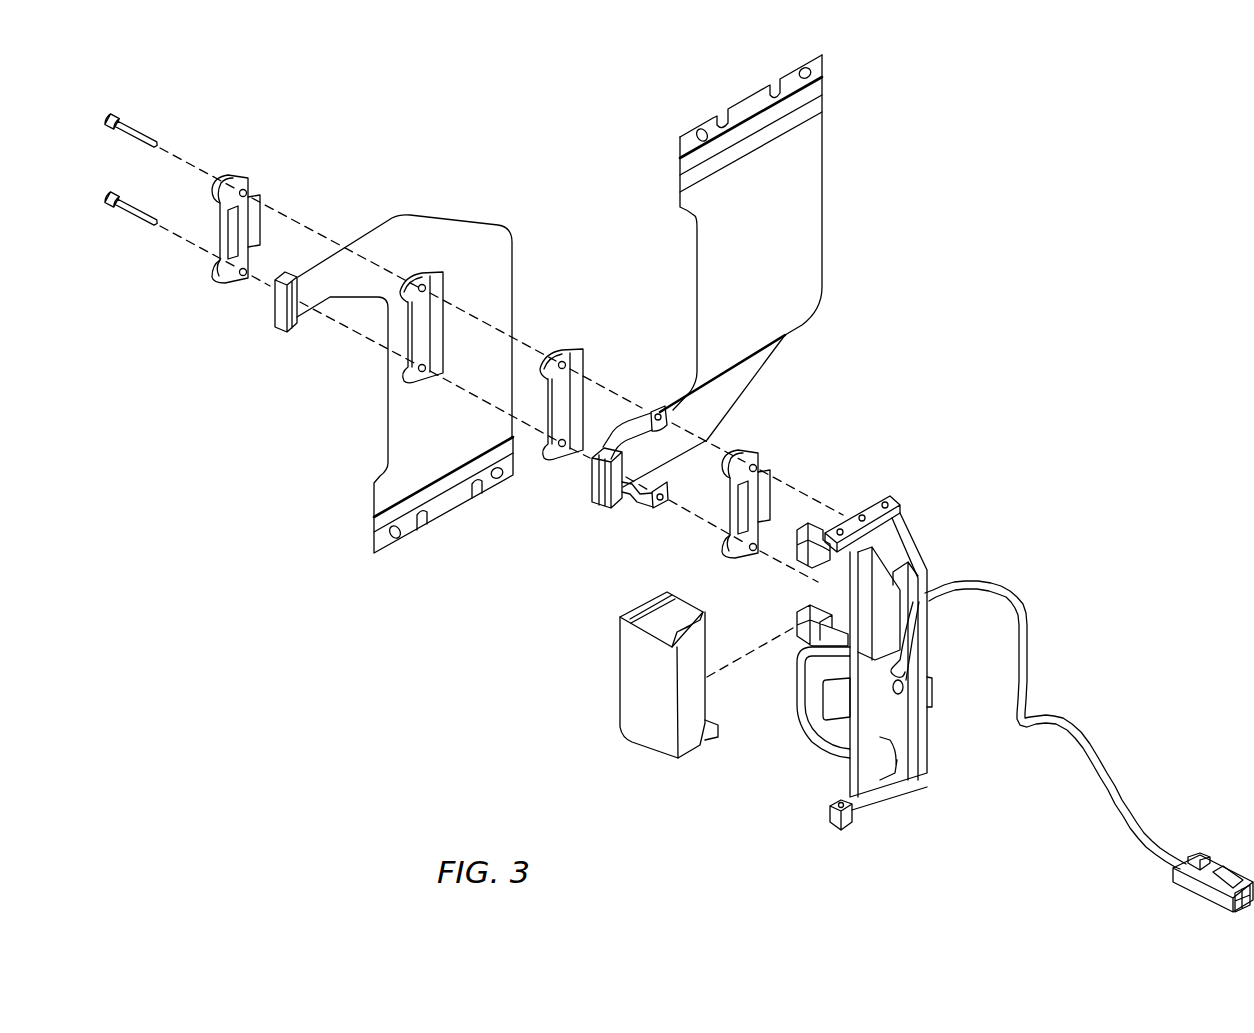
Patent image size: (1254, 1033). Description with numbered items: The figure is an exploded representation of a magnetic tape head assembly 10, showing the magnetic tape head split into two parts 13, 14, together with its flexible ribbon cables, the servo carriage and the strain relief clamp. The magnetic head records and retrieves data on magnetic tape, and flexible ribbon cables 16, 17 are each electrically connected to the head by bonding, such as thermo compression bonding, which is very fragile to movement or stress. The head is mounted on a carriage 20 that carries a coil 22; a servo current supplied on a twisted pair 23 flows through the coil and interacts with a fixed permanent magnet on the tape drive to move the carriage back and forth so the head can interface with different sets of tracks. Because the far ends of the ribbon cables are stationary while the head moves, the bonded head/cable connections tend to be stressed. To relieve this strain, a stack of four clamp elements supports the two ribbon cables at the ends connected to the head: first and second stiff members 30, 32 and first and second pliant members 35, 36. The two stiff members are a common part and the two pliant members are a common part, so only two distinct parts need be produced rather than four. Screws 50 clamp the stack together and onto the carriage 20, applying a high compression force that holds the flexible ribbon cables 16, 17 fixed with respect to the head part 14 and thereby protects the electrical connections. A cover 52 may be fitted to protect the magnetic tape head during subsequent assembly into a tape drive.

The magnetic tape head assembly 10 is at (988, 414).
The magnetic tape head part 13 is at (284, 302).
The magnetic tape head part 14 is at (593, 492).
The flexible ribbon cable 16 is at (750, 384).
The flexible ribbon cable 17 is at (452, 220).
The carriage 20 is at (875, 803).
The coil 22 is at (816, 750).
The twisted pair 23 is at (1095, 753).
The first stiff member 30 is at (747, 453).
The second stiff member 32 is at (232, 180).
The first pliant member 35 is at (573, 348).
The second pliant member 36 is at (433, 287).
The screws 50 is at (110, 118).
The cover 52 is at (645, 743).